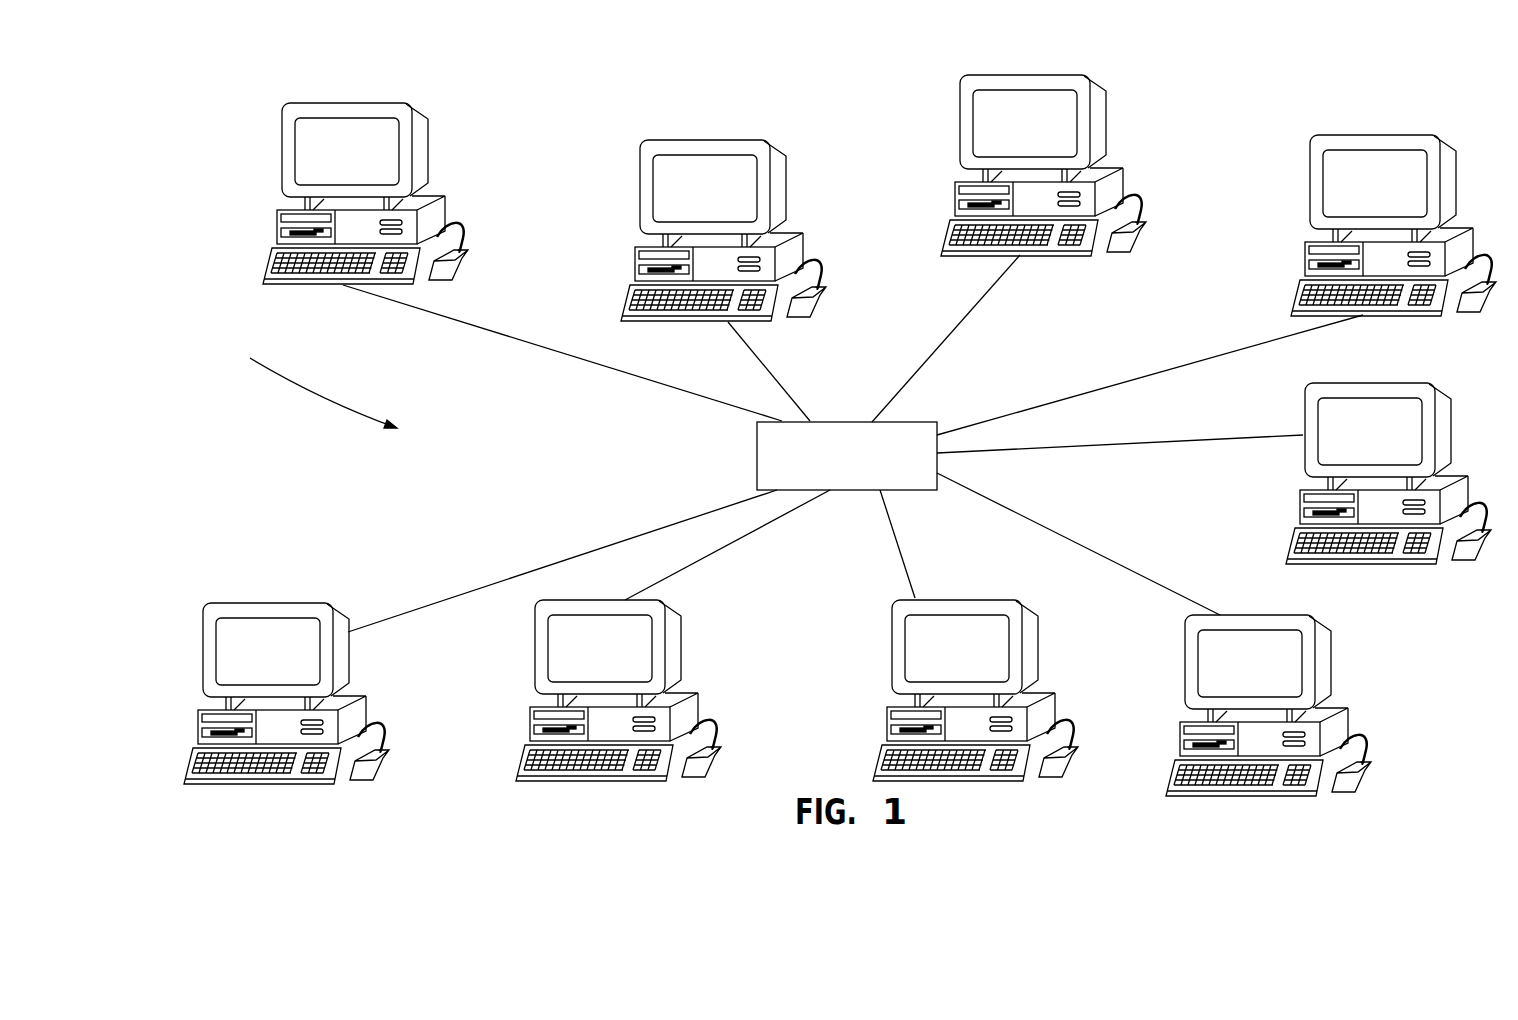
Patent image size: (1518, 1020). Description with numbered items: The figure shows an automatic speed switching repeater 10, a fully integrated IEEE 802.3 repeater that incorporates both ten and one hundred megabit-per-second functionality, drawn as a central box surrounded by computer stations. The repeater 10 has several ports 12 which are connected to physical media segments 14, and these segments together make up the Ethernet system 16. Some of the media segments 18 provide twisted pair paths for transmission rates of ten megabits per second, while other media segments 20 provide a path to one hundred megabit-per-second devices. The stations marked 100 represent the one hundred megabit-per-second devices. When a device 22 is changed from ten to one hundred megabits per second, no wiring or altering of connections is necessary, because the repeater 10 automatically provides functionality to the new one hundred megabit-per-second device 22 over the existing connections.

The repeater 10 is at (755, 458).
The ports 12 is at (782, 421).
The physical media segments 14 is at (563, 352).
The Ethernet system 16 is at (308, 381).
The media segments 18 is at (1122, 442).
The media segments 20 is at (932, 362).
The device 22 is at (282, 152).
The computer workstation 100 is at (777, 422).